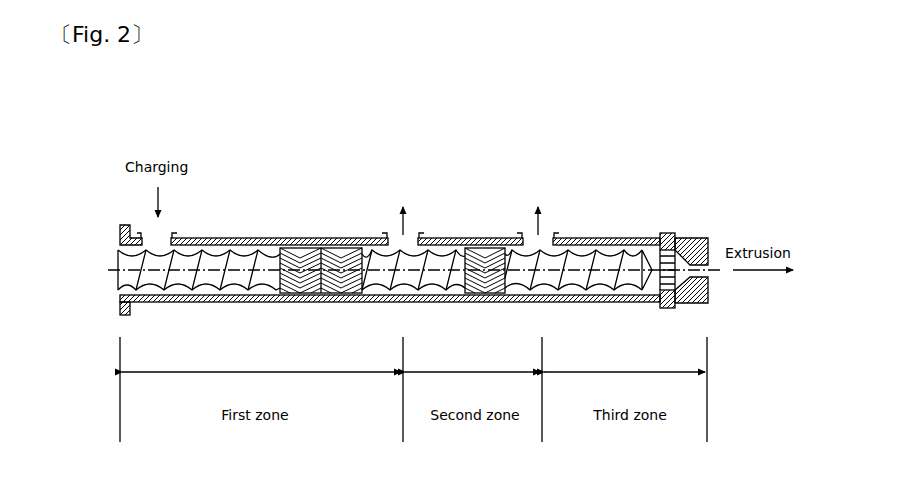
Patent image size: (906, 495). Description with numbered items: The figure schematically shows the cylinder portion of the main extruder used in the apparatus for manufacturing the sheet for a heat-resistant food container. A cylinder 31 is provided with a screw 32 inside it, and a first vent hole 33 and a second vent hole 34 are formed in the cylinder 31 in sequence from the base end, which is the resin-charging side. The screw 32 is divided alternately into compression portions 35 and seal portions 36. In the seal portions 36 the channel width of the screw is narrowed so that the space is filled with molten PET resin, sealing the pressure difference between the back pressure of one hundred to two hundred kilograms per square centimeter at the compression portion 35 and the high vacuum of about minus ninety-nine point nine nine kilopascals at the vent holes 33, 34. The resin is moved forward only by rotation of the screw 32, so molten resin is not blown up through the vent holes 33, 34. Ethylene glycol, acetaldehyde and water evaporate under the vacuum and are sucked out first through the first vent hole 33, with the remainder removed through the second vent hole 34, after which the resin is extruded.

The cylinder 31 is at (120, 300).
The screw 32 is at (124, 260).
The first vent hole 33 is at (408, 236).
The second vent hole 34 is at (545, 236).
The compression portion 35 is at (215, 248).
The seal portion 36 is at (308, 256).